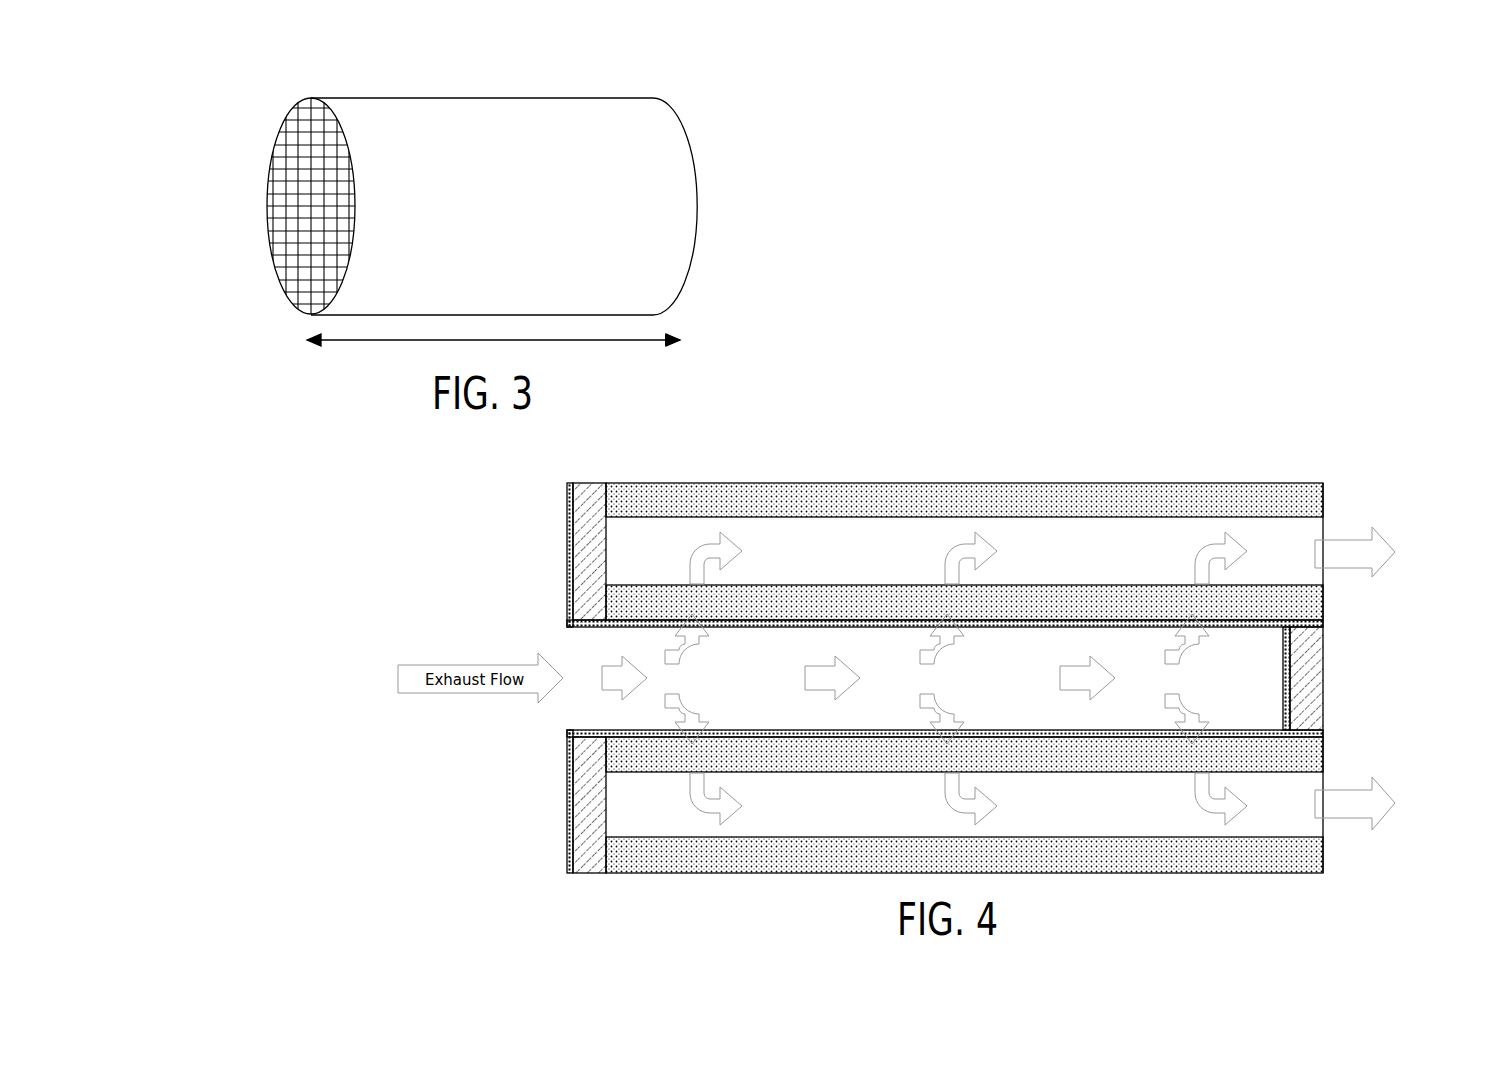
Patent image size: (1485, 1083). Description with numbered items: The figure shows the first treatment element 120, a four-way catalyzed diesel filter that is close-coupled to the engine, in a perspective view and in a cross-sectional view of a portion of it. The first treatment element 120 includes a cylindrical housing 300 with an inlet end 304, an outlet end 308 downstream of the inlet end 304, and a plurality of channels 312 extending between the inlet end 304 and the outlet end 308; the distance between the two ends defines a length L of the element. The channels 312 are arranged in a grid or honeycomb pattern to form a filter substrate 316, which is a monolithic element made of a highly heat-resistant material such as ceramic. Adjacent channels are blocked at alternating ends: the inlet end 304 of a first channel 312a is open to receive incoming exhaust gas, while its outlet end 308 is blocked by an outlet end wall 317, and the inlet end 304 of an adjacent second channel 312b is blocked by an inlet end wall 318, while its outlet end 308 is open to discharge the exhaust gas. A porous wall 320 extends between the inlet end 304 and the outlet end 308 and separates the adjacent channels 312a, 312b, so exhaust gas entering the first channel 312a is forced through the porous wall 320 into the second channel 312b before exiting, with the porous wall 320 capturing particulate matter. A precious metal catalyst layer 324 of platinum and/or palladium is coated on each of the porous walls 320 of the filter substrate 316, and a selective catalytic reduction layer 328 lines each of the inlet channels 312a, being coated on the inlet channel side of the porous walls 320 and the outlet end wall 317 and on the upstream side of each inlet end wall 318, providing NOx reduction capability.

In FIG. 3, the first treatment element 120 is at (375, 58).
In FIG. 3, the cylindrical housing 300 is at (485, 97).
In FIG. 3, the inlet end 304 is at (255, 205).
In FIG. 4, the inlet end 304 is at (508, 770).
In FIG. 3, the outlet end 308 is at (712, 207).
In FIG. 4, the outlet end 308 is at (1348, 745).
In FIG. 3, the channels 312 is at (318, 257).
In FIG. 4, the first channel 312a is at (580, 658).
In FIG. 4, the second channel 312b is at (1262, 540).
In FIG. 3, the filter substrate 316 is at (268, 155).
In FIG. 4, the filter substrate 316 is at (955, 470).
In FIG. 4, the outlet end wall 317 is at (1323, 660).
In FIG. 4, the inlet end wall 318 is at (580, 538).
In FIG. 4, the porous wall 320 is at (1260, 586).
In FIG. 4, the precious metal catalyst layer 324 is at (890, 595).
In FIG. 4, the selective catalytic reduction (SCR) layer 328 is at (795, 727).